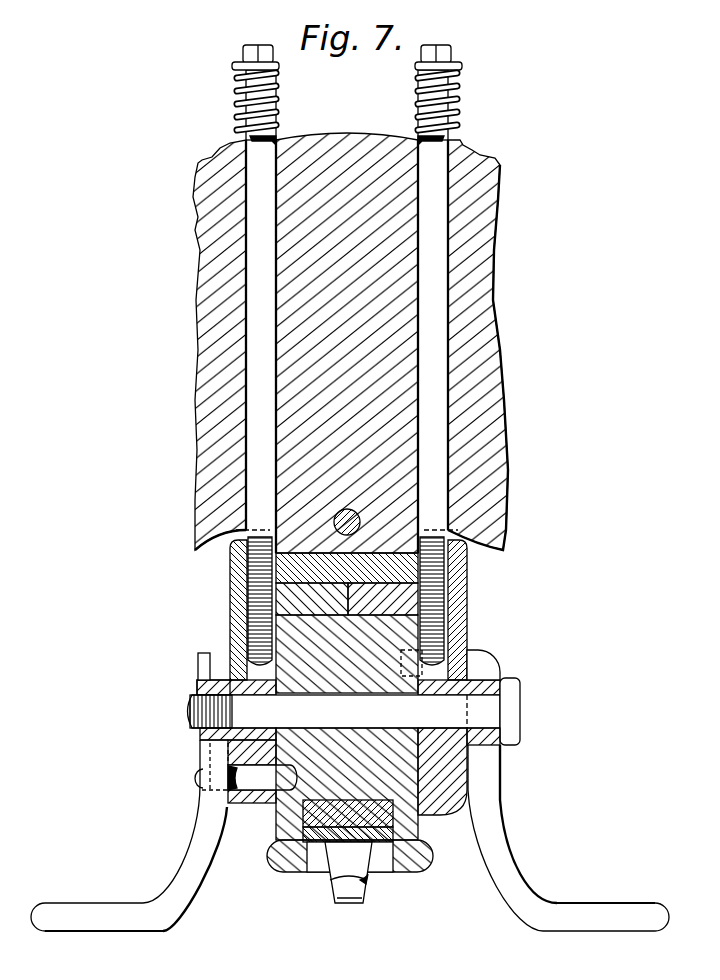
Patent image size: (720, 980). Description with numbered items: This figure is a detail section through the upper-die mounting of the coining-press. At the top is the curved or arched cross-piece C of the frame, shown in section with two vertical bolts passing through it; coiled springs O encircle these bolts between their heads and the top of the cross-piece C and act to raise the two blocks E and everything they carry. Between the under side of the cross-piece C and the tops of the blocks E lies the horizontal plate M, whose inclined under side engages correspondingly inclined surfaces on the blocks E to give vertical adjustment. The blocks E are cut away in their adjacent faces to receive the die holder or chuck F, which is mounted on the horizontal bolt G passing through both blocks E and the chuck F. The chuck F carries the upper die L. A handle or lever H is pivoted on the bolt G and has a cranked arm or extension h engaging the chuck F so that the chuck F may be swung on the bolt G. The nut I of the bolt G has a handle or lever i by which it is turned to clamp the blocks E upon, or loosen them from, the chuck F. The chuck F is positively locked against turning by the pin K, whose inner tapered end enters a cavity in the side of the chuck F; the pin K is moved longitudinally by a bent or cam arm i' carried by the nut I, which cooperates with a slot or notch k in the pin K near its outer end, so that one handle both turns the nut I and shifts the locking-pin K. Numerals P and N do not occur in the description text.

The cross-piece C is at (364, 152).
The bolt heads P is at (243, 54).
The coiled springs O is at (235, 95).
The pin N is at (344, 515).
The horizontal plate M is at (347, 568).
The die holder or chuck F is at (347, 654).
The blocks E is at (231, 571).
The nut I is at (197, 688).
The bent or cam arm i' is at (198, 656).
The cranked arm or extension h is at (486, 653).
The horizontal bolt G is at (354, 711).
The locking pin K is at (196, 777).
The slot or notch k is at (207, 766).
The upper die L is at (348, 851).
The handle or lever H is at (599, 908).
The handle or lever i is at (129, 835).